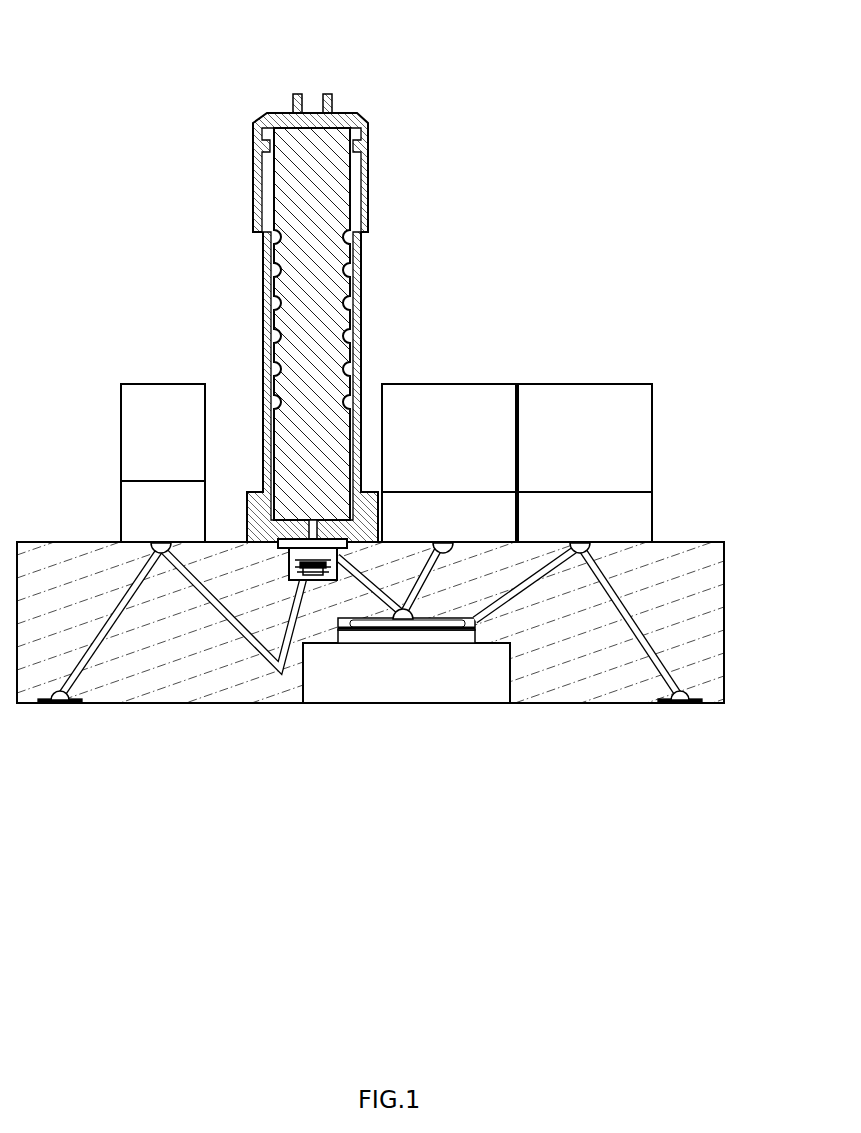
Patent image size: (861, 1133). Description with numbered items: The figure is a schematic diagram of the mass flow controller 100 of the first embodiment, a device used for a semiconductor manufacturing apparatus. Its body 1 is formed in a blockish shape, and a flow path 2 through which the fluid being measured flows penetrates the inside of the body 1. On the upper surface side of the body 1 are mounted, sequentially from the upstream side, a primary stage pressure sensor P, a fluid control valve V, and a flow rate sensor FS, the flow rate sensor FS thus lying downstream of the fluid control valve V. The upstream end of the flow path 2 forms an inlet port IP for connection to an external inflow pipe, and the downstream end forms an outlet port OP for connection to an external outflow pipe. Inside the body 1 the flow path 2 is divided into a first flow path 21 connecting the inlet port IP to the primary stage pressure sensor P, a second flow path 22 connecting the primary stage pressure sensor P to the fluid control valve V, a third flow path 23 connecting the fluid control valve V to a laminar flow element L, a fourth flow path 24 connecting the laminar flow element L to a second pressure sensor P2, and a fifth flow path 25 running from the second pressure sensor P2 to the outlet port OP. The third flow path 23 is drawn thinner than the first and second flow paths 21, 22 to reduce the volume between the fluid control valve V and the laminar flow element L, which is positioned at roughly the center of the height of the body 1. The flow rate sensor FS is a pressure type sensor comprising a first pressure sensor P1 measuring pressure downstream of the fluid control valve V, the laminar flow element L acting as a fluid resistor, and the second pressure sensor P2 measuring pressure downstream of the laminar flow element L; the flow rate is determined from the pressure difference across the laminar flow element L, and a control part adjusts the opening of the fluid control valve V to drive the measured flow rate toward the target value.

The mass flow controller 100 is at (111, 94).
The body 1 is at (215, 703).
The flow path 2 is at (370, 728).
The first flow path 21 is at (123, 620).
The second flow path 22 is at (277, 660).
The third flow path 23 is at (367, 593).
The fourth flow path 24 is at (530, 597).
The fifth flow path 25 is at (630, 692).
The fluid control valve V is at (382, 297).
The primary stage pressure sensor P is at (164, 383).
The first pressure sensor P1 is at (450, 383).
The second pressure sensor P2 is at (540, 383).
The flow rate sensor FS is at (519, 396).
The laminar flow element L is at (407, 633).
The inlet port IP is at (62, 705).
The outlet port OP is at (682, 705).